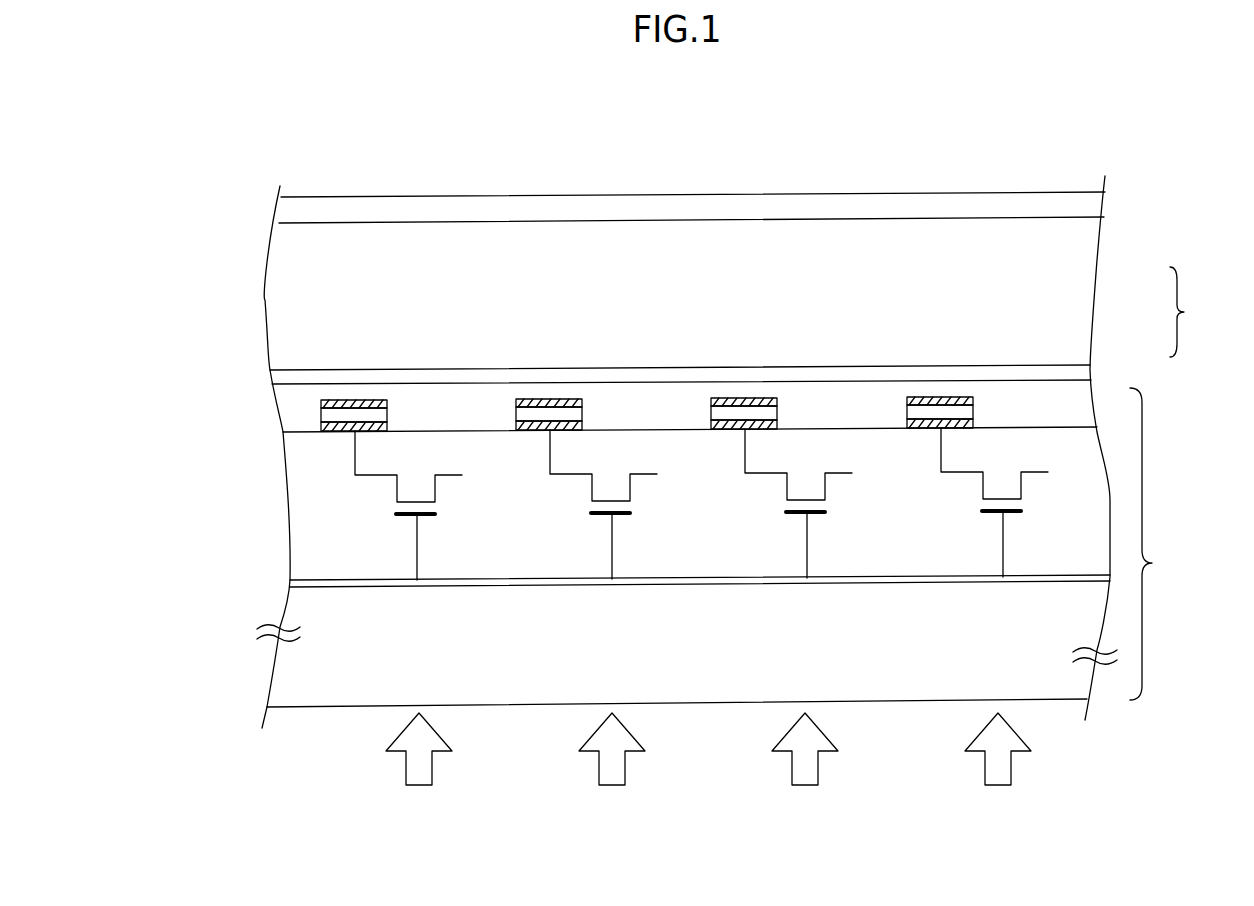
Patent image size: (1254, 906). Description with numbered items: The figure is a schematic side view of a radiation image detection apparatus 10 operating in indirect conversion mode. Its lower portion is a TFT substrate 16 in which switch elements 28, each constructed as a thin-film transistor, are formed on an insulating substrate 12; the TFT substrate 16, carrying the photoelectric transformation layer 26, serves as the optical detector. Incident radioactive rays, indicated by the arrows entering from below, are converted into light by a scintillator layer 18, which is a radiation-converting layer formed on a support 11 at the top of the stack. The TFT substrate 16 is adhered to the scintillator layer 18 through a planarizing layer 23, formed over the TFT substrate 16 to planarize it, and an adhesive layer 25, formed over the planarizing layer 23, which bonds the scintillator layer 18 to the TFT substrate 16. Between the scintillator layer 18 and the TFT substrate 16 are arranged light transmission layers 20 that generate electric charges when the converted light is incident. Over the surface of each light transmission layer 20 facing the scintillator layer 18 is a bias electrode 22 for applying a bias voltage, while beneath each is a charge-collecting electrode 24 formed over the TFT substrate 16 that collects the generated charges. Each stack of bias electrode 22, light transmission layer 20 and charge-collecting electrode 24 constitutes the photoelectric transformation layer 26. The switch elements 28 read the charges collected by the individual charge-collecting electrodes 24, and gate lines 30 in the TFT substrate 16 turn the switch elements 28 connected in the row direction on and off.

The radiation image detection apparatus 10 is at (300, 150).
The support 11 is at (1083, 203).
The insulating substrate 12 is at (290, 665).
The TFT substrate 16 is at (1160, 544).
The scintillator layer 18 is at (280, 297).
The light transmission layer 20 is at (390, 412).
The bias electrode 22 is at (389, 400).
The planarizing layer 23 is at (290, 415).
The charge-collecting electrode 24 is at (390, 428).
The adhesive layer 25 is at (287, 376).
The photoelectric transformation layer 26 is at (1202, 312).
The switch element 28 is at (448, 486).
The gate line 30 is at (1086, 575).